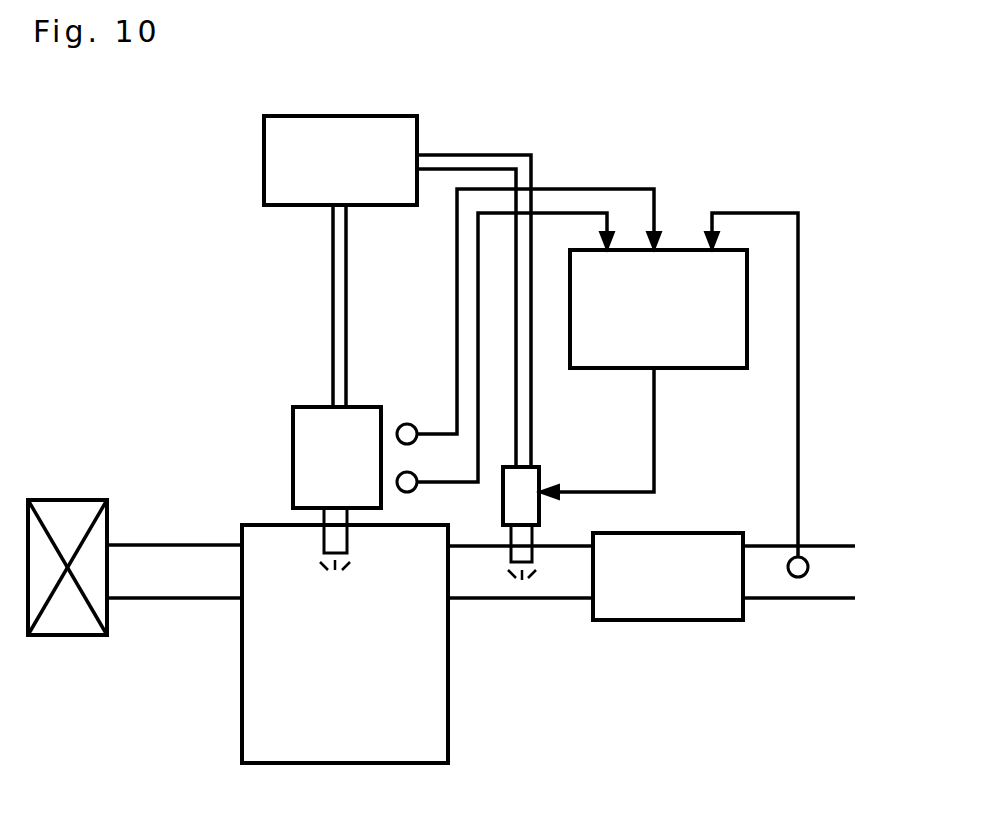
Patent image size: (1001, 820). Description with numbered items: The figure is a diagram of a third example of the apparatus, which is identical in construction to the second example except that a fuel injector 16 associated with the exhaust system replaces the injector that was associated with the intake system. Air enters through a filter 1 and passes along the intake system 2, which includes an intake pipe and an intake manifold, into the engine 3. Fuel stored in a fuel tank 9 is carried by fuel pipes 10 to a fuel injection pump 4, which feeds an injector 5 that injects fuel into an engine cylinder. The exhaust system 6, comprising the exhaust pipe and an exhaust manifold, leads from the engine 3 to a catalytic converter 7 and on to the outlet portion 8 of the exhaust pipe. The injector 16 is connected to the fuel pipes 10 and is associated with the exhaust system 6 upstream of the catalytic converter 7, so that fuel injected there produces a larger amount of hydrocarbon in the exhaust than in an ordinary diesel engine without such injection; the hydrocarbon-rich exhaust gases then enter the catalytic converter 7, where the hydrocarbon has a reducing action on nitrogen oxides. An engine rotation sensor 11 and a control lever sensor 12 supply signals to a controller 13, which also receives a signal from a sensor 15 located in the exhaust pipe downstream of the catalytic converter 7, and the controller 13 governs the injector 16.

The filter 1 is at (50, 635).
The intake system 2 is at (192, 545).
The engine 3 is at (278, 700).
The fuel injection pump 4 is at (293, 451).
The injector 5 is at (324, 538).
The exhaust system 6 is at (523, 625).
The catalytic converter 7 is at (670, 621).
The outlet portion of exhaust pipe 8 is at (765, 600).
The fuel tank 9 is at (264, 172).
The fuel pipes 10 is at (327, 290).
The engine rotation sensor 11 is at (408, 424).
The control lever sensor 12 is at (415, 490).
The controller 13 is at (686, 369).
The oxygen sensor 15 is at (808, 568).
The fuel injector 16 is at (539, 467).